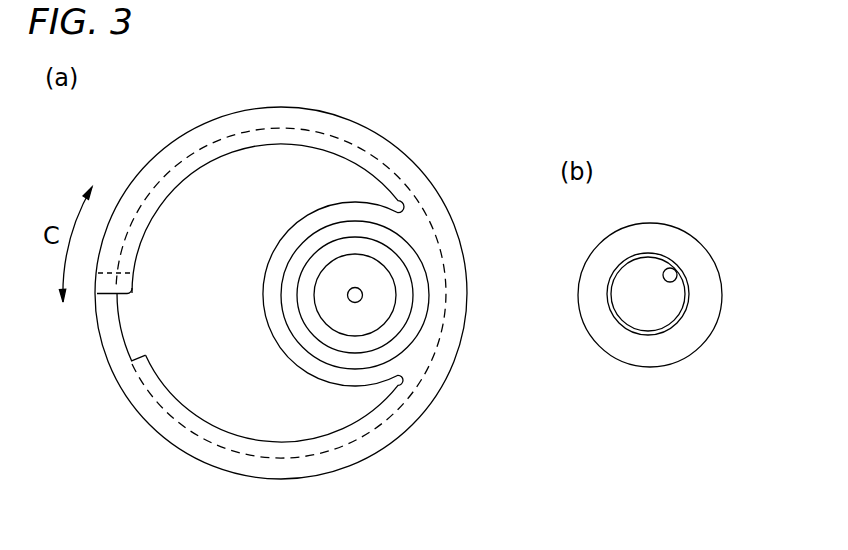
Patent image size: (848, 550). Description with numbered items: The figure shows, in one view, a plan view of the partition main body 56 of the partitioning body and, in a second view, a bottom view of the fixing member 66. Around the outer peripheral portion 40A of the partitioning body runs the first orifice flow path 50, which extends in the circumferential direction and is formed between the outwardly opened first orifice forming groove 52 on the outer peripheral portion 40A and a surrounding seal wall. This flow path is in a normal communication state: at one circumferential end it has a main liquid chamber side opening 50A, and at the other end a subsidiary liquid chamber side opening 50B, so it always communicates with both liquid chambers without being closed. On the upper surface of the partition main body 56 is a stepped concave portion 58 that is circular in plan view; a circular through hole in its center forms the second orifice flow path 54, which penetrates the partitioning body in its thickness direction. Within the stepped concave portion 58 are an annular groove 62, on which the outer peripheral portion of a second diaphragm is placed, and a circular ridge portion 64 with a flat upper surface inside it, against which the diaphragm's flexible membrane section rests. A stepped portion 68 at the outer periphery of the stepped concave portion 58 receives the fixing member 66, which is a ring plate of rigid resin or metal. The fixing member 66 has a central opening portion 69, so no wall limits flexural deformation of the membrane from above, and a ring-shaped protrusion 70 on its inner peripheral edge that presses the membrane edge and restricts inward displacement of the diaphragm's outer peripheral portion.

The outer peripheral portion 40A is at (156, 158).
The first orifice flow path 50 is at (210, 452).
The main liquid chamber side opening 50A is at (112, 345).
The subsidiary liquid chamber side opening 50B is at (138, 232).
The first orifice forming groove 52 is at (359, 145).
The second orifice flow path 54 is at (362, 290).
The partition main body 56 is at (300, 58).
The stepped concave portion 58 is at (352, 362).
The annular groove 62 is at (380, 254).
The circular ridge portion 64 is at (370, 320).
The stepped portion 68 is at (318, 238).
The fixing member 66 is at (688, 189).
The opening portion 69 is at (678, 274).
The ring-shaped protrusion 70 is at (680, 325).